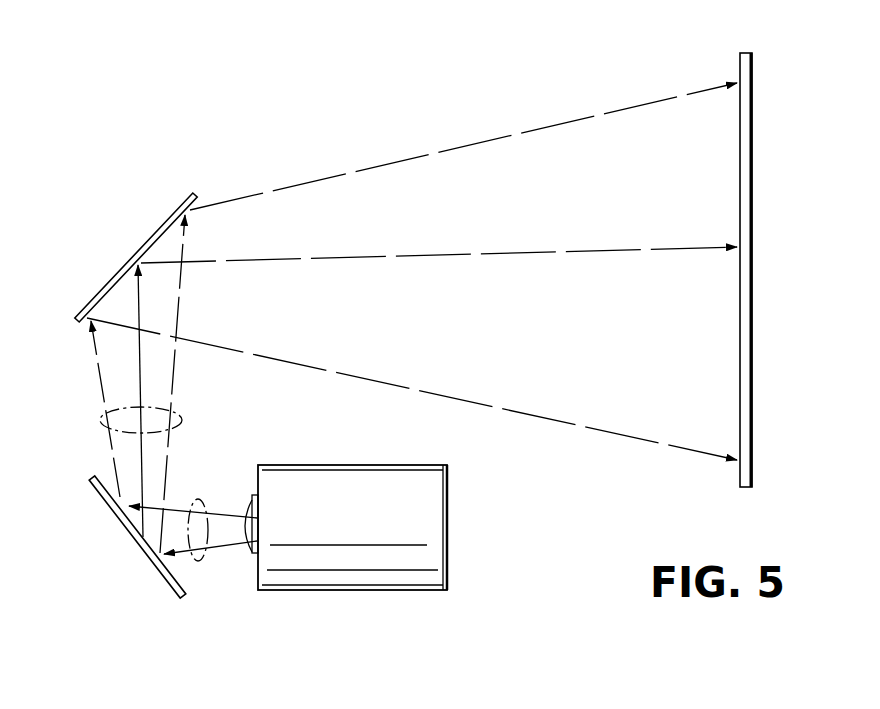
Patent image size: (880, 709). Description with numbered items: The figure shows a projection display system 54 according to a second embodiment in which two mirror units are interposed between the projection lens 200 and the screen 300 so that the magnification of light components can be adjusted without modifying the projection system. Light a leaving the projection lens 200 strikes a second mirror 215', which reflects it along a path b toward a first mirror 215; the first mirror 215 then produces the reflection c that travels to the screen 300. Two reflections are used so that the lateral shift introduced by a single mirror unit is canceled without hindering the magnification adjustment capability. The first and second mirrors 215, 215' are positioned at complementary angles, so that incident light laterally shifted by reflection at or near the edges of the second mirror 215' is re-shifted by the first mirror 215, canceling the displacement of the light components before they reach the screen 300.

The projection display system 54 is at (200, 118).
The first mirror 215 is at (136, 246).
The second mirror 215' is at (103, 537).
The path b is at (108, 425).
The light a is at (197, 510).
The reflection c is at (443, 135).
The projection lens 200 is at (430, 515).
The screen 300 is at (752, 450).